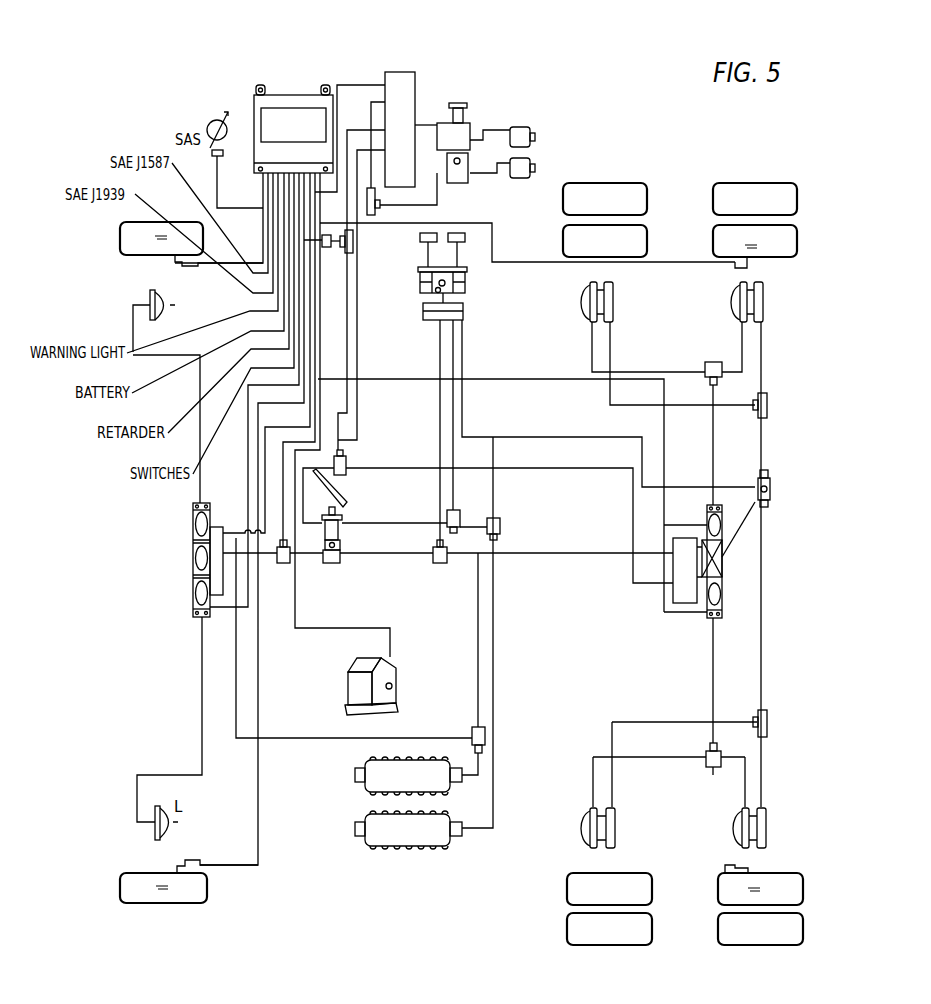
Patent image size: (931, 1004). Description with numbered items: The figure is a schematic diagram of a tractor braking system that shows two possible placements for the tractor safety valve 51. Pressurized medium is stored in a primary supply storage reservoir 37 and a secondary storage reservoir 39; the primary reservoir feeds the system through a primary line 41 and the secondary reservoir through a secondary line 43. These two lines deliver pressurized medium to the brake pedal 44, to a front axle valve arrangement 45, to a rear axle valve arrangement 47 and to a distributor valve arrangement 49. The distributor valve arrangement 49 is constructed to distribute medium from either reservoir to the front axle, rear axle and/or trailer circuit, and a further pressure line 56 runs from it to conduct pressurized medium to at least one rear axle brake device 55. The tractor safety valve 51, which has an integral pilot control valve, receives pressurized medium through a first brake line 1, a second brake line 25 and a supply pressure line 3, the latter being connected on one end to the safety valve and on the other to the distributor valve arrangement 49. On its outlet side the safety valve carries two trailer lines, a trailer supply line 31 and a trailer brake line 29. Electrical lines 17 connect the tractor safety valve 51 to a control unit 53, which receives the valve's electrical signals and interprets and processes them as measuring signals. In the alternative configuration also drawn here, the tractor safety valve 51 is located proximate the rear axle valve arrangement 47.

The first brake line 1 is at (357, 334).
The supply pressure line 3 is at (380, 83).
The electrical lines 17 is at (336, 84).
The second brake line 25 is at (348, 303).
The trailer brake line 29 is at (503, 168).
The trailer supply line 31 is at (503, 130).
The primary supply storage reservoir 37 is at (447, 848).
The secondary storage reservoir 39 is at (458, 780).
The primary line 41 is at (497, 663).
The secondary line 43 is at (478, 653).
The brake pedal 44 is at (337, 563).
The front axle valve arrangement 45 is at (193, 565).
The rear axle valve arrangement 47 is at (722, 568).
The distributor valve arrangement 49 is at (467, 284).
The tractor safety valve 51 is at (409, 137).
The control unit 53 is at (276, 93).
The rear axle brake device 55 is at (613, 293).
The further pressure line 56 is at (507, 437).